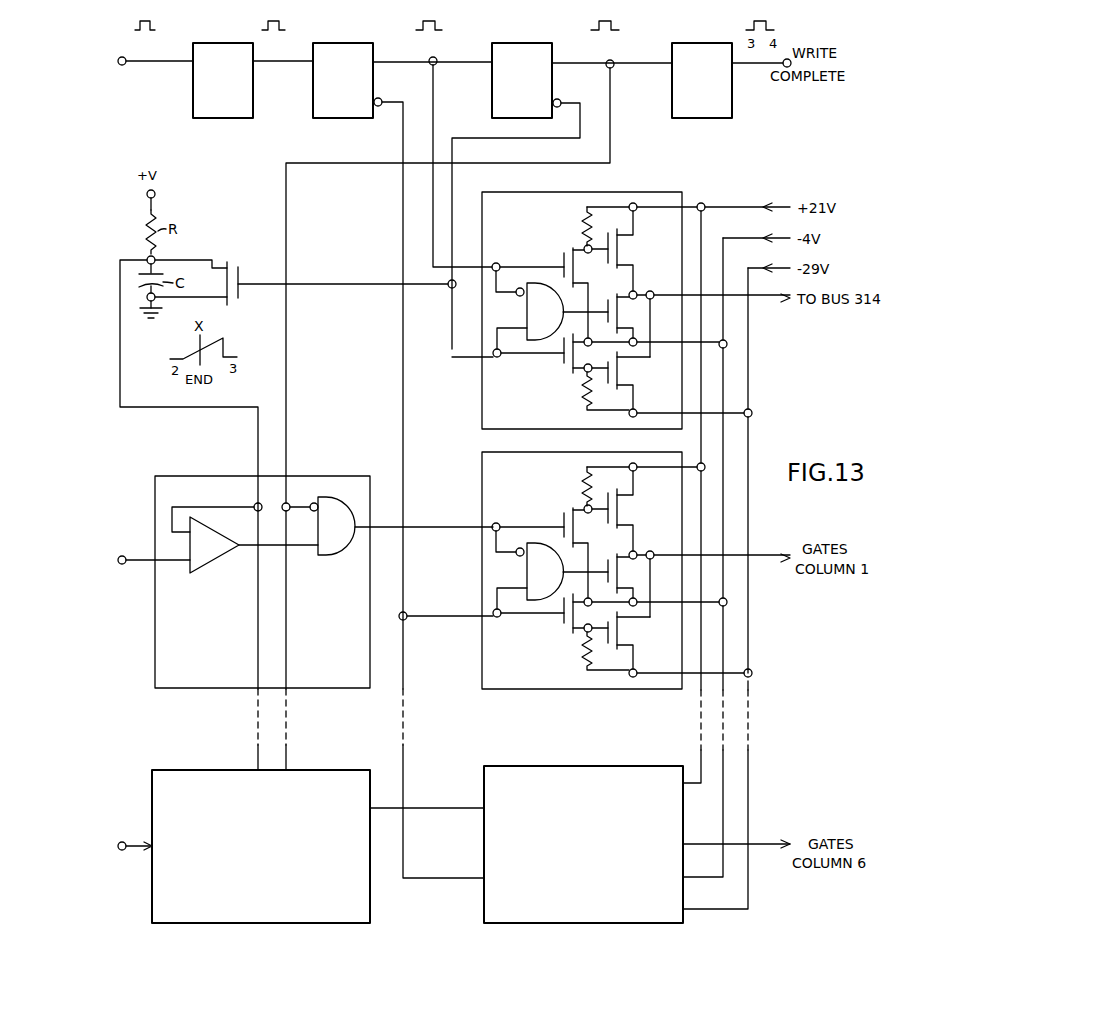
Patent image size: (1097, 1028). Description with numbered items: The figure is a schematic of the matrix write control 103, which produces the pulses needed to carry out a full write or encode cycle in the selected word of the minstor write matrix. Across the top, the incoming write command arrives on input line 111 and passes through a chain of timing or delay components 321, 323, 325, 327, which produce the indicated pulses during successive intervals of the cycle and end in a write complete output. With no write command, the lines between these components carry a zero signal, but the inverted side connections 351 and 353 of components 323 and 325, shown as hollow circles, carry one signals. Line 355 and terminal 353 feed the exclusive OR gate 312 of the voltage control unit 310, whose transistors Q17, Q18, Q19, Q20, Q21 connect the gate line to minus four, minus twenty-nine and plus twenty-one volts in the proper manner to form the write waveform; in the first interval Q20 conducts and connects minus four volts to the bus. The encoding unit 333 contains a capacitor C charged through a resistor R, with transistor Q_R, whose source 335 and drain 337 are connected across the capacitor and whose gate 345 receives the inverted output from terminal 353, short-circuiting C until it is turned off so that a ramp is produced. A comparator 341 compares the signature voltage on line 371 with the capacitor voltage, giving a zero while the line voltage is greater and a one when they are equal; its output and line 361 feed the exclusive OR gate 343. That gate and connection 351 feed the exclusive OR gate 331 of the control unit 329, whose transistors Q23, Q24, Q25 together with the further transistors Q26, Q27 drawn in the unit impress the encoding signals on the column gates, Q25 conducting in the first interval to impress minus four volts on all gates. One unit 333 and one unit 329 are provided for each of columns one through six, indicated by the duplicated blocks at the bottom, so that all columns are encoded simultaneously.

The start input line 111 is at (165, 64).
The timing component 321 is at (212, 43).
The timing component 323 is at (331, 43).
The timing component 325 is at (505, 43).
The timing component 327 is at (680, 43).
The connection 351 is at (383, 100).
The terminal 353 is at (559, 100).
The line 355 is at (477, 74).
The line 361 is at (653, 72).
The drain 337 is at (220, 262).
The gate 345 is at (240, 273).
The source 335 is at (212, 302).
The voltage control unit 310 is at (698, 190).
The exclusive OR gate 312 is at (524, 319).
The control unit 329 is at (533, 766).
The exclusive OR gate 331 is at (525, 571).
The encoding unit 333 is at (195, 466).
The comparator 341 is at (200, 567).
The exclusive OR gate 343 is at (338, 557).
The line 371 is at (135, 557).
The matrix write control 103 is at (798, 917).
The transistor Q17 is at (568, 250).
The transistor Q18 is at (566, 368).
The transistor Q19 is at (612, 241).
The transistor Q20 is at (612, 288).
The transistor Q21 is at (615, 395).
The transistor Q23 is at (555, 545).
The transistor Q24 is at (636, 511).
The transistor Q25 is at (638, 567).
The transistor Q26 is at (555, 623).
The transistor Q27 is at (638, 643).